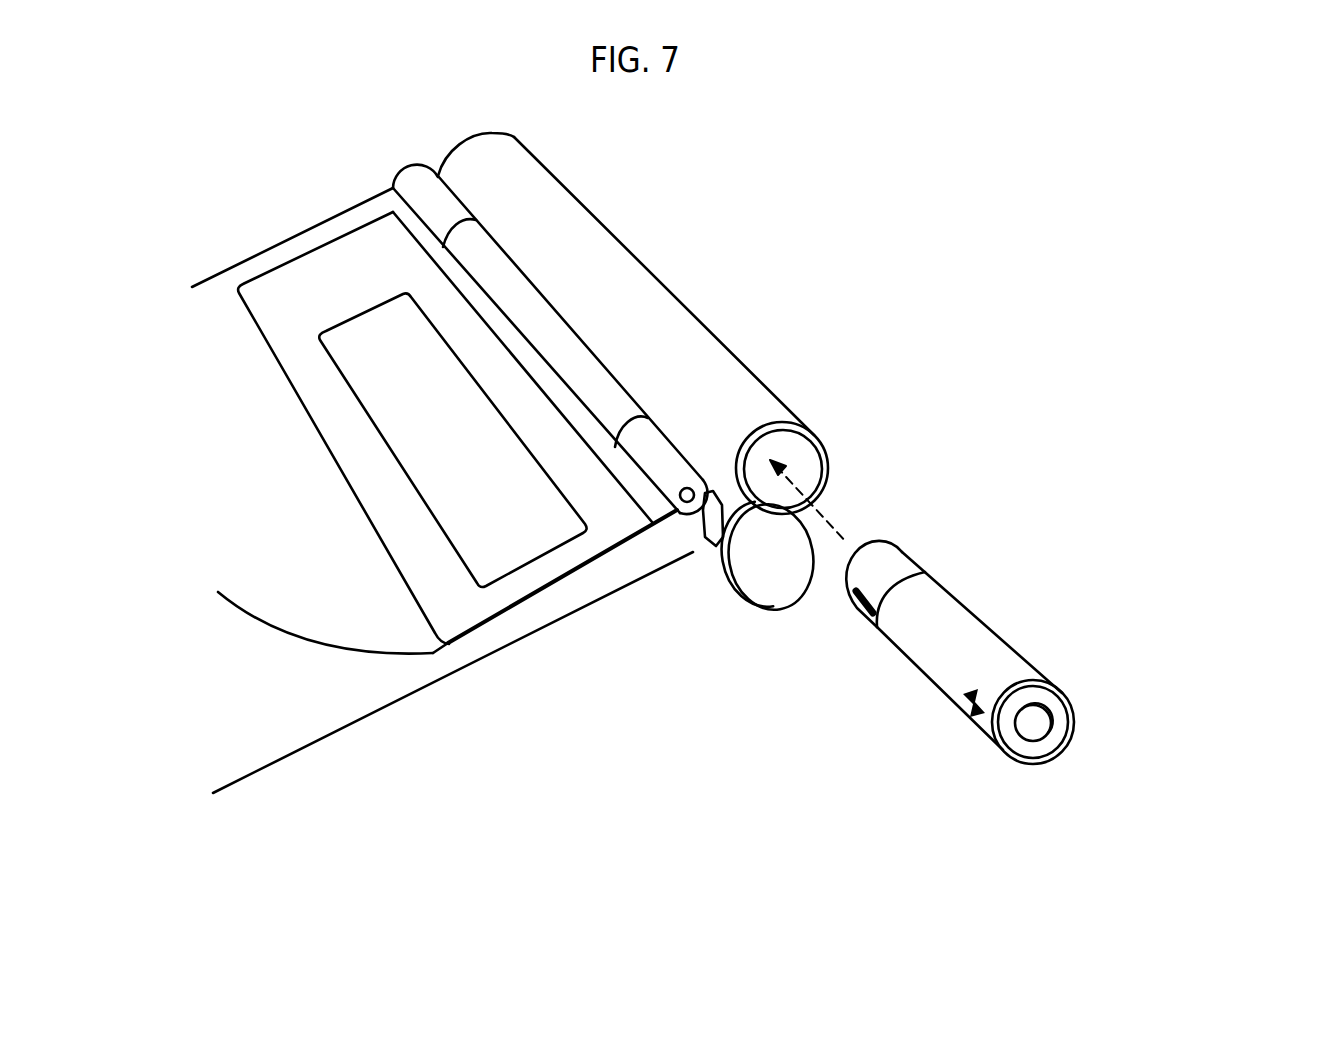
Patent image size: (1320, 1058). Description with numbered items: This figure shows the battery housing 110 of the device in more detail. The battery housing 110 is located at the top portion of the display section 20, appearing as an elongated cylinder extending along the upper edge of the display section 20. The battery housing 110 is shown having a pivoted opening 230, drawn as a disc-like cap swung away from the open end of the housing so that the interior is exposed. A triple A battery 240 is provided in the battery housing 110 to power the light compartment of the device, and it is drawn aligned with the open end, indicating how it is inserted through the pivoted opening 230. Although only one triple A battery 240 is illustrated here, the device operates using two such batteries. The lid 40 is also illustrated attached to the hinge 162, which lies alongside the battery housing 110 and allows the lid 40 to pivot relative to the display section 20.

The display section 20 is at (328, 740).
The lid 40 is at (225, 297).
The battery housing 110 is at (648, 297).
The hinge 162 is at (670, 470).
The pivoted opening 230 is at (773, 563).
The triple A battery 240 is at (957, 620).